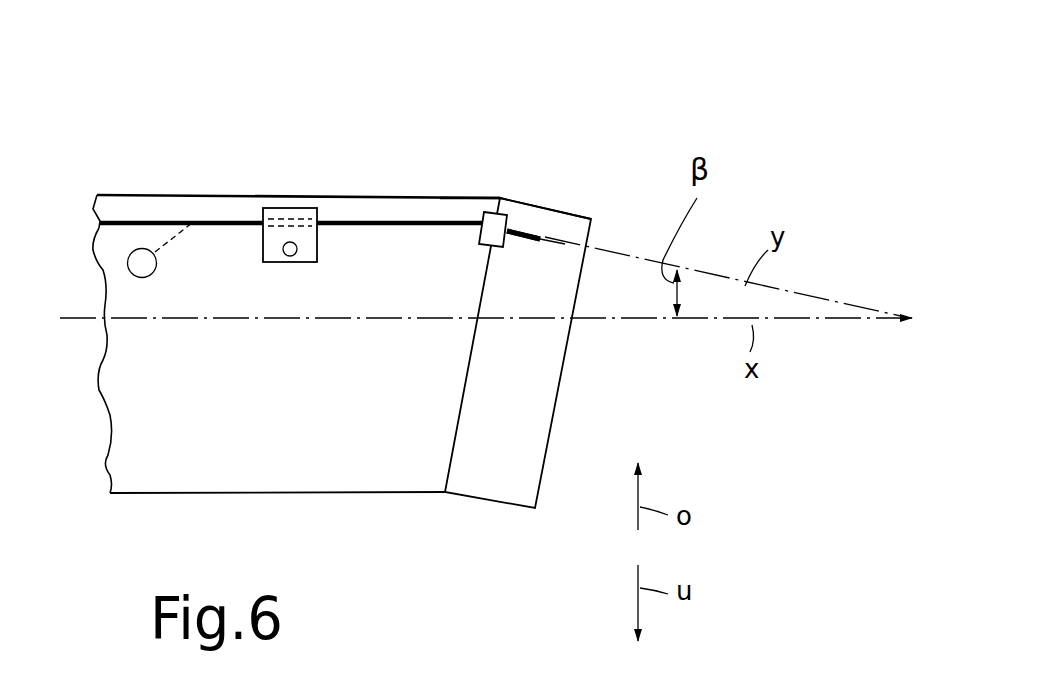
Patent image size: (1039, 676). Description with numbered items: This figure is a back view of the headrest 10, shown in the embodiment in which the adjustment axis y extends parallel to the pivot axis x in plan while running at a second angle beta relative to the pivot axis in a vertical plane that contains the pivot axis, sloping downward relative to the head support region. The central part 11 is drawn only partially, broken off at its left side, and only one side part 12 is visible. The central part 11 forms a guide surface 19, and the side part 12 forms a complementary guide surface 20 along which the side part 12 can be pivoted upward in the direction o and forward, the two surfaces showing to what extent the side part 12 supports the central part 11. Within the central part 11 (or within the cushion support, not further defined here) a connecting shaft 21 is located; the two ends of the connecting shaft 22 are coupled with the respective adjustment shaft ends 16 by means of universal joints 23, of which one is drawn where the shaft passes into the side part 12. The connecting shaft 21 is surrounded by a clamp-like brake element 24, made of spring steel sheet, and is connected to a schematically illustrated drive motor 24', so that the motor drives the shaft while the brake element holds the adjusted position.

The headrest 10 is at (331, 163).
The central part 11 is at (213, 193).
The side part 12 is at (554, 207).
The adjustment shaft end 16 is at (524, 250).
The guide surface 19 is at (471, 372).
The complementary guide surface 20 is at (448, 432).
The connecting shaft 21 is at (414, 206).
The connecting shaft 22 is at (466, 206).
The universal joint 23 is at (478, 253).
The clamp-like brake element 24 is at (270, 291).
The drive motor 24' is at (111, 261).